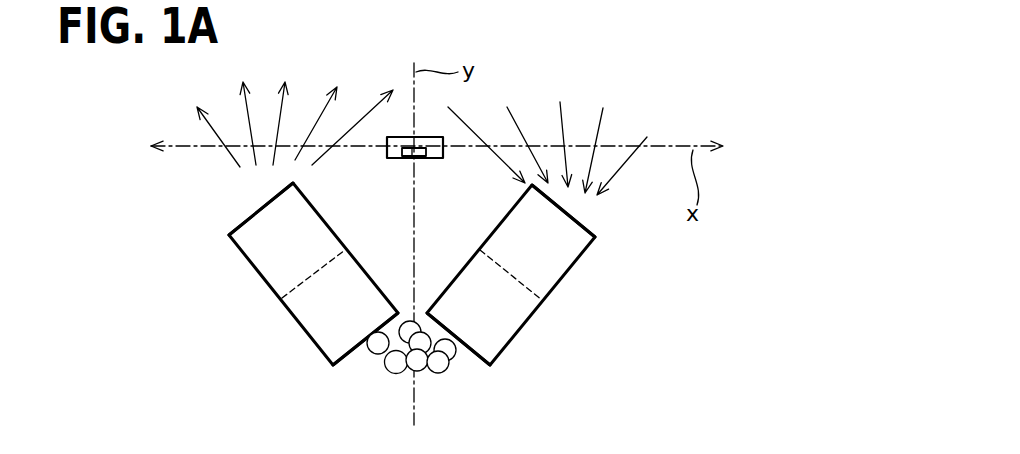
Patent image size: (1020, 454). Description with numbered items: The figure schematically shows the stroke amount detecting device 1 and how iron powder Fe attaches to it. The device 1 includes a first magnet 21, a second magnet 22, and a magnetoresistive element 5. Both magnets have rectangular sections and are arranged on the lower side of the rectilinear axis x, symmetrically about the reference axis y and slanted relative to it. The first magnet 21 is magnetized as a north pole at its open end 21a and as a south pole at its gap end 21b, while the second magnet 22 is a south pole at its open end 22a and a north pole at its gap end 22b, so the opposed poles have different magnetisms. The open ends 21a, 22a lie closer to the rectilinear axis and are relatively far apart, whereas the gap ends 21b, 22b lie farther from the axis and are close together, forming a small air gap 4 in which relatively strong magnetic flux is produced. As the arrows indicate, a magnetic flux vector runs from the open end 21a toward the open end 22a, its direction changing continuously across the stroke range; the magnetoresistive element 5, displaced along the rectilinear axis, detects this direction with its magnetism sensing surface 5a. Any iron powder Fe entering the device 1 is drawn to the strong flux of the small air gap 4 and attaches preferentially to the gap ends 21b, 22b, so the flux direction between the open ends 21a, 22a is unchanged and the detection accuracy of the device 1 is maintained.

The stroke amount detecting device 1 is at (716, 105).
The small air gap 4 is at (416, 385).
The magnetoresistive element 5 is at (410, 139).
The magnetism sensing surface 5a is at (405, 158).
The first magnet 21 is at (285, 299).
The open end of first magnet 21a is at (247, 218).
The gap end of first magnet 21b is at (353, 355).
The second magnet 22 is at (547, 305).
The open end of second magnet 22a is at (578, 215).
The gap end of second magnet 22b is at (475, 357).
The iron powder Fe is at (440, 362).